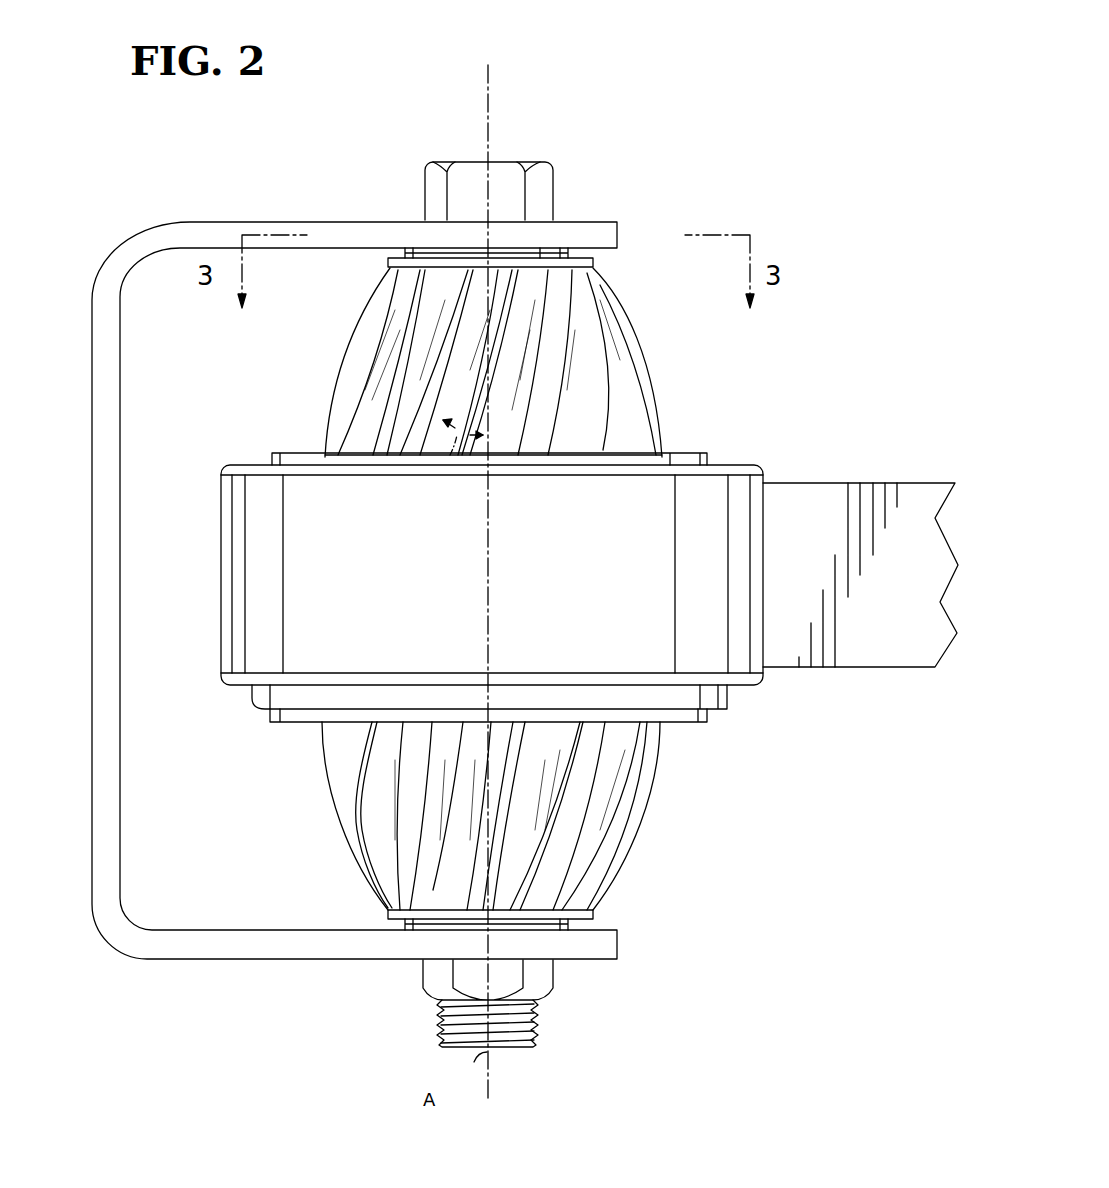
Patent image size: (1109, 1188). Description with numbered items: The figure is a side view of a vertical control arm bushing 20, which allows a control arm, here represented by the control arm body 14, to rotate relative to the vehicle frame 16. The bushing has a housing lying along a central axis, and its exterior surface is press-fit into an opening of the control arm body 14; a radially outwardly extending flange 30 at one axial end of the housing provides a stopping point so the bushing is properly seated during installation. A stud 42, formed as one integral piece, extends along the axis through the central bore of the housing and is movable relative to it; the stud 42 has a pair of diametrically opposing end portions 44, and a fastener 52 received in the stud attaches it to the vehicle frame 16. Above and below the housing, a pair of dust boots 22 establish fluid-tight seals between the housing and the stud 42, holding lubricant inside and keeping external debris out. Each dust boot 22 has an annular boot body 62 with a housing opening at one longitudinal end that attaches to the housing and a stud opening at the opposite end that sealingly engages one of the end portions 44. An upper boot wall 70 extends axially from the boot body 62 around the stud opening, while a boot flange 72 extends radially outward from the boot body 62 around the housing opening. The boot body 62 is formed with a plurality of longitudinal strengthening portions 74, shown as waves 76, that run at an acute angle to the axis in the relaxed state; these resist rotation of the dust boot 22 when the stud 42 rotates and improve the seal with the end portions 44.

The control arm body 14 is at (830, 483).
The vehicle frame 16 is at (92, 852).
The vertical control arm bushing 20 is at (618, 278).
The dust boot 22 is at (487, 589).
The radially outwardly extending flange 30 is at (712, 698).
The stud 42 is at (577, 925).
The end portions 44 is at (577, 253).
The fastener 52 is at (515, 170).
The boot body 62 is at (645, 385).
The upper boot wall 70 is at (390, 262).
The boot flange 72 is at (707, 458).
The longitudinal strengthening portions 74 is at (453, 450).
The waves 76 is at (393, 437).